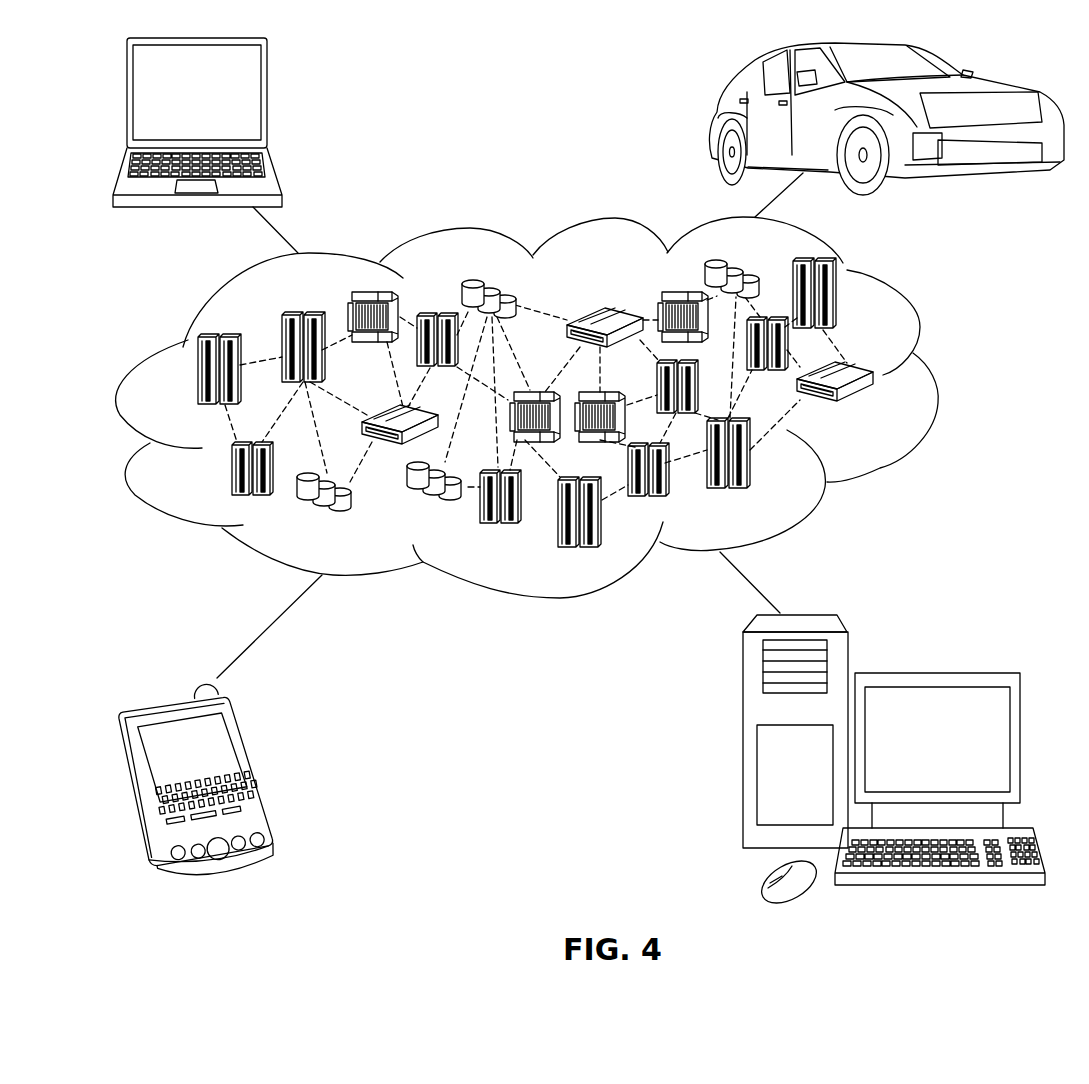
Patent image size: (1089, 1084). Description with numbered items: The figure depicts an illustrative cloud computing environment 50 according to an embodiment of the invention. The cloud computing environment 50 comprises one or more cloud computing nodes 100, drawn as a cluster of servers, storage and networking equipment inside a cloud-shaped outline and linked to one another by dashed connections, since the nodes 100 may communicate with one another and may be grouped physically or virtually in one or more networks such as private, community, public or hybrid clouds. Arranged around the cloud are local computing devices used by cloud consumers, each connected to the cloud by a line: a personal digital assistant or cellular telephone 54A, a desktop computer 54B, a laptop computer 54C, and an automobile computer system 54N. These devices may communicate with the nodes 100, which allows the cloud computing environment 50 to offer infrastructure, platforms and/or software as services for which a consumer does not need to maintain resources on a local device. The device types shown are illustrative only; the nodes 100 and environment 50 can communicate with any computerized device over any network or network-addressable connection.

The cloud computing environment 50 is at (936, 380).
The cloud computing nodes 100 is at (886, 413).
The personal digital assistant (PDA) or cellular telephone 54A is at (257, 770).
The desktop computer 54B is at (934, 673).
The laptop computer 54C is at (267, 101).
The automobile computer system 54N is at (712, 118).